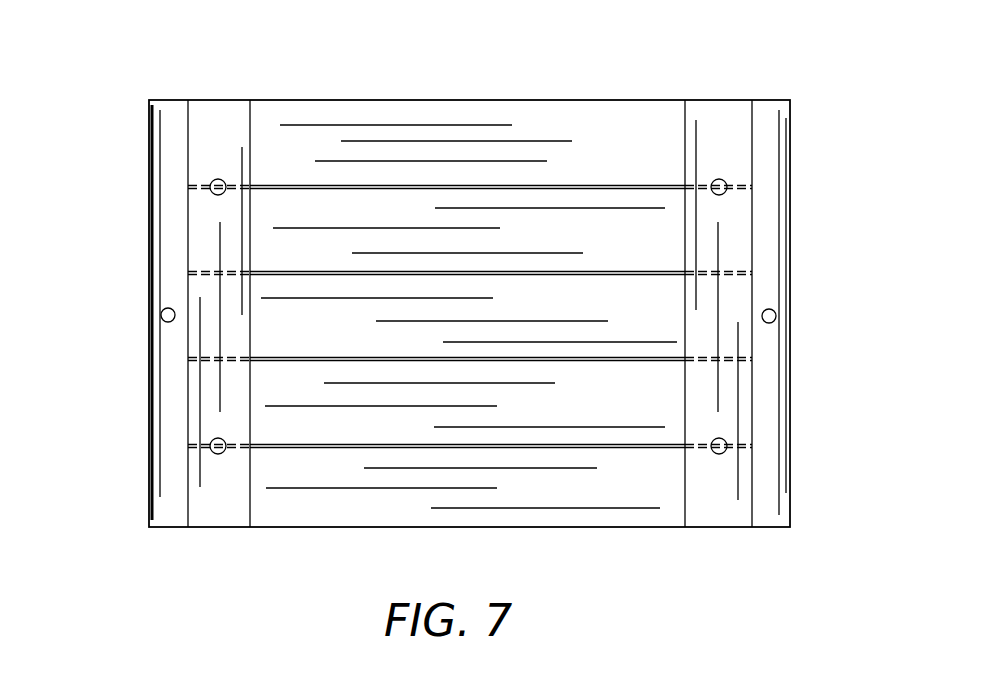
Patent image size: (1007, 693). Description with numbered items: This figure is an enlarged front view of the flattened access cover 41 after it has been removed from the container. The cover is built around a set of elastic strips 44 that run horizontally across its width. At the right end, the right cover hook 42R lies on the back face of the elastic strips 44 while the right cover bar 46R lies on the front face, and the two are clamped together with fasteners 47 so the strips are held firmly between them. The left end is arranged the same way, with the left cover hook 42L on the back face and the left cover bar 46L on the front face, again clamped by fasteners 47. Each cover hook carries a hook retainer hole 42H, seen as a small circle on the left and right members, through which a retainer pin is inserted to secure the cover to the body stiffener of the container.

The access cover 41 is at (725, 100).
The left cover hook 42L is at (150, 173).
The right cover hook 42R is at (786, 170).
The hook retainer hole 42H is at (163, 322).
The elastic strips 44 is at (492, 447).
The left cover bar 46L is at (252, 495).
The right cover bar 46R is at (684, 496).
The fastener 47 is at (222, 180).